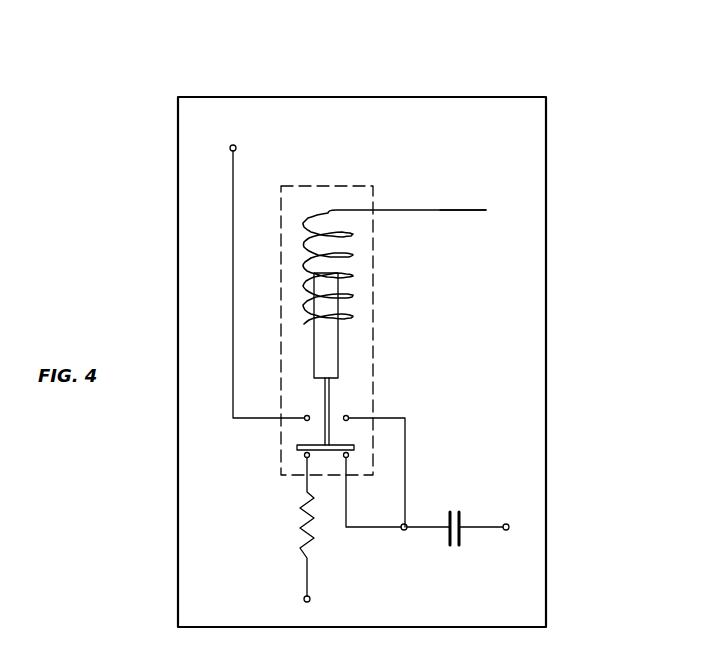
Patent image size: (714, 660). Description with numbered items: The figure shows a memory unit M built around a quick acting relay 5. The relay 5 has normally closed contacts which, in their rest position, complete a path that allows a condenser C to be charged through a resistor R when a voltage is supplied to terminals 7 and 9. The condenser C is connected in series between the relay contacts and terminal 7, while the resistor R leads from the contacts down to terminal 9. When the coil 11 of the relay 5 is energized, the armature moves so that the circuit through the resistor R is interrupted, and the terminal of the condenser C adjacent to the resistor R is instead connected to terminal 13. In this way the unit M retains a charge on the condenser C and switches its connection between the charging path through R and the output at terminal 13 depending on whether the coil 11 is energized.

The terminal 13 is at (236, 147).
The coil 11 is at (451, 210).
The quick acting relay 5 is at (373, 284).
The memory unit M is at (546, 337).
The terminal 7 is at (506, 530).
The condenser C is at (450, 511).
The resistor R is at (301, 528).
The terminal 9 is at (310, 598).